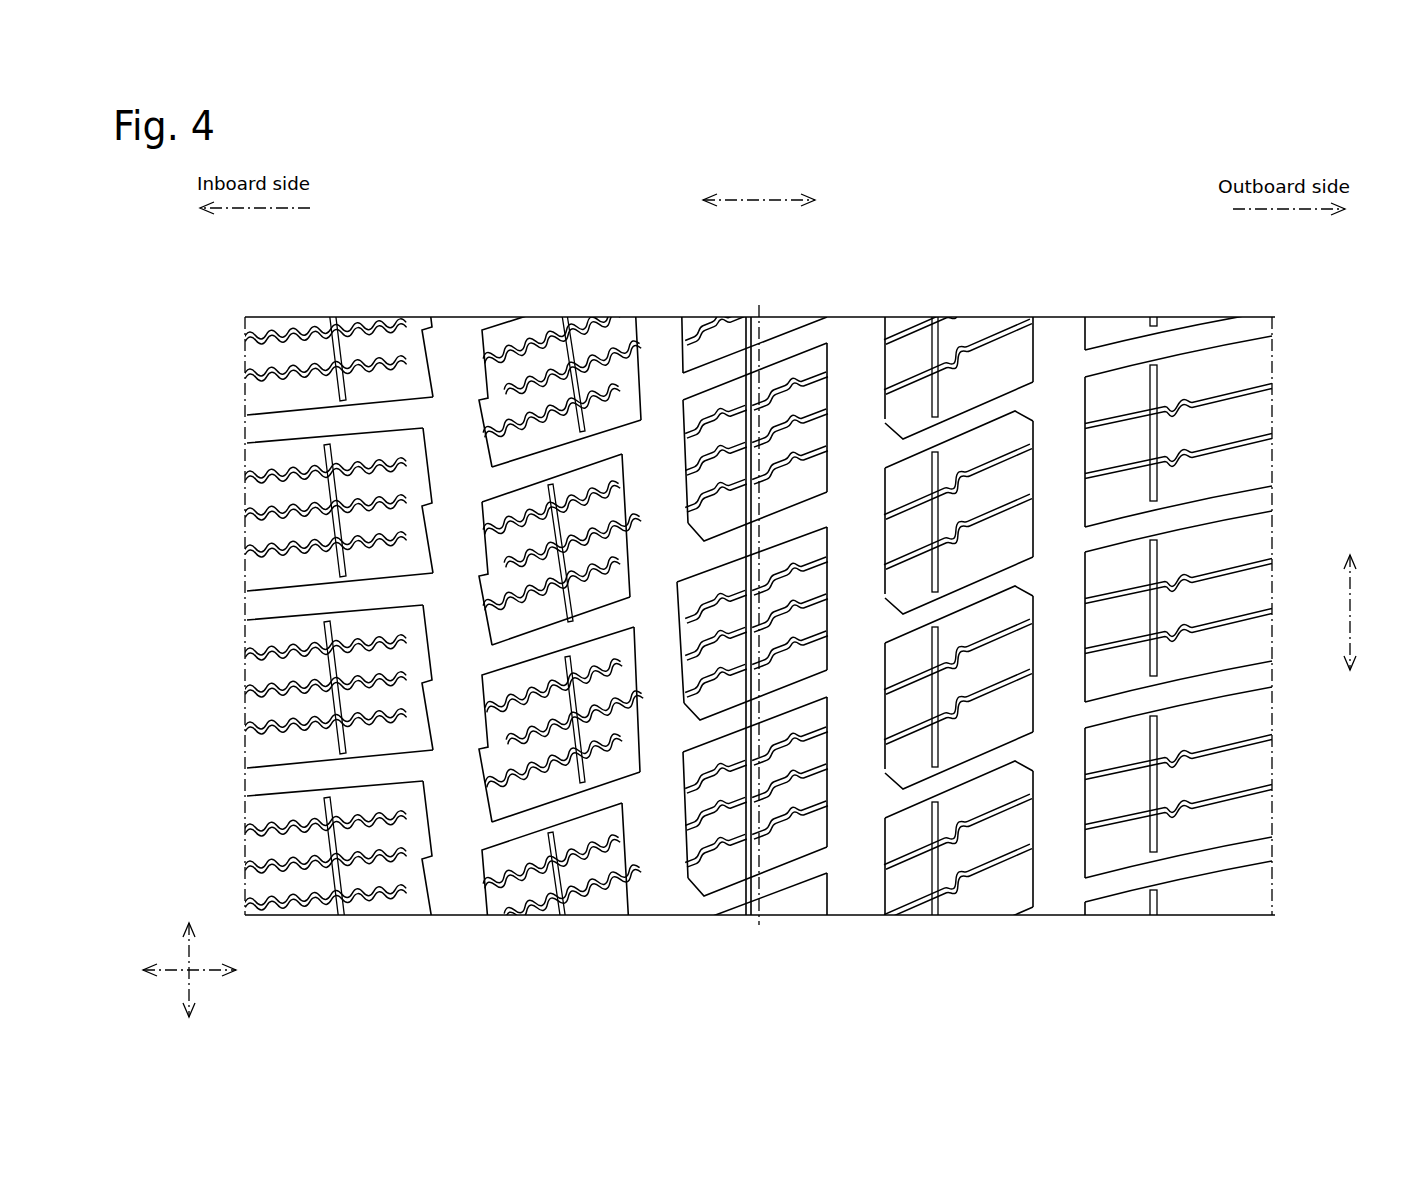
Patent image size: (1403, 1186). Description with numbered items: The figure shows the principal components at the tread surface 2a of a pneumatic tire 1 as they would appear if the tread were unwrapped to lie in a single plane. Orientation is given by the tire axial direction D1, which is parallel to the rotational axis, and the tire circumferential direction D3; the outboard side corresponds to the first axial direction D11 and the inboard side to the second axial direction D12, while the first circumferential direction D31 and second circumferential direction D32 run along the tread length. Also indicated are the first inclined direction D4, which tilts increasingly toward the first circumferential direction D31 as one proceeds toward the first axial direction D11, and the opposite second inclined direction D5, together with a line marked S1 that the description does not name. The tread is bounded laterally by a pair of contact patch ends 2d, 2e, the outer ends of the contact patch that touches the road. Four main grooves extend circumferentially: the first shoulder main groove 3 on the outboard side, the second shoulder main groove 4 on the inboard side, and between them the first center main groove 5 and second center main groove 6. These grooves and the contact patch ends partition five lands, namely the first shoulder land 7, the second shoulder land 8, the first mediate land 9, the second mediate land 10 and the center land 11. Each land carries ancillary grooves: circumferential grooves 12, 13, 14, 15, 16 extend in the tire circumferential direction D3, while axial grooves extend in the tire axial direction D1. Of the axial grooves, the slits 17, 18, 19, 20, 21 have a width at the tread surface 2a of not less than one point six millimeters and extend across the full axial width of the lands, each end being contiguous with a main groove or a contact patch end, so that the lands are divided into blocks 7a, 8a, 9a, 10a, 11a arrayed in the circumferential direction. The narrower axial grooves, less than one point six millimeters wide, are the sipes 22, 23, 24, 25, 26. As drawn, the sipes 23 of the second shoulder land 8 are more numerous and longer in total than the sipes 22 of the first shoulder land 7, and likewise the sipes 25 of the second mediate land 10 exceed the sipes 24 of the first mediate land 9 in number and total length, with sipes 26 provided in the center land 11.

The tire 1 is at (782, 599).
The tread surface 2a is at (1258, 890).
The contact patch end 2d is at (1272, 375).
The contact patch end 2e is at (247, 369).
The first shoulder main groove 3 is at (1057, 343).
The second shoulder main groove 4 is at (457, 343).
The first center main groove 5 is at (855, 343).
The second center main groove 6 is at (660, 343).
The first shoulder land 7 is at (1179, 608).
The second shoulder land 8 is at (319, 630).
The first mediate land 9 is at (952, 626).
The second mediate land 10 is at (570, 627).
The center land 11 is at (781, 598).
The block 7a is at (1193, 900).
The block 8a is at (322, 912).
The block 9a is at (968, 903).
The block 10a is at (590, 902).
The block 11a is at (783, 907).
The circumferential groove 12 is at (1152, 612).
The circumferential groove 13 is at (337, 527).
The circumferential groove 14 is at (934, 470).
The circumferential groove 15 is at (566, 615).
The circumferential groove 16 is at (750, 737).
The slit 17 is at (1278, 669).
The slit 18 is at (243, 601).
The slit 19 is at (1040, 573).
The slit 20 is at (630, 436).
The slit 21 is at (835, 691).
The sipe 22 is at (1202, 636).
The sipe 23 is at (297, 475).
The sipe 24 is at (977, 475).
The sipe 25 is at (597, 603).
The sipe 26 is at (763, 833).
The tire equator S1 is at (760, 885).
The tire axial direction D1 is at (759, 190).
The tire circumferential direction D3 is at (1361, 612).
The first axial direction D11 is at (1310, 210).
The second axial direction D12 is at (231, 209).
The first circumferential direction D31 is at (1347, 542).
The second circumferential direction D32 is at (1347, 687).
The first inclined direction D4 is at (189, 970).
The second inclined direction D5 is at (188, 970).